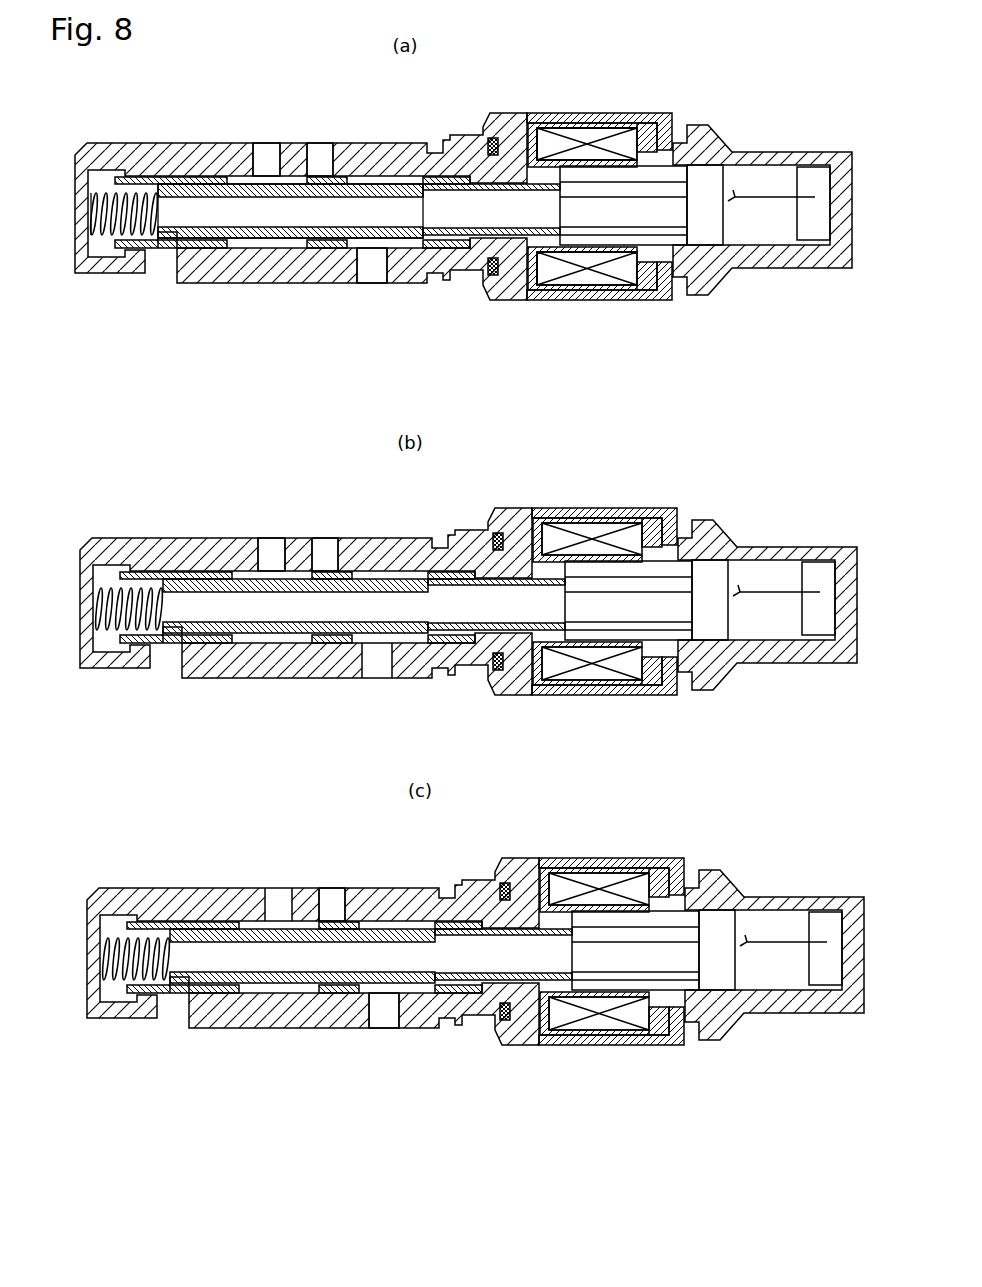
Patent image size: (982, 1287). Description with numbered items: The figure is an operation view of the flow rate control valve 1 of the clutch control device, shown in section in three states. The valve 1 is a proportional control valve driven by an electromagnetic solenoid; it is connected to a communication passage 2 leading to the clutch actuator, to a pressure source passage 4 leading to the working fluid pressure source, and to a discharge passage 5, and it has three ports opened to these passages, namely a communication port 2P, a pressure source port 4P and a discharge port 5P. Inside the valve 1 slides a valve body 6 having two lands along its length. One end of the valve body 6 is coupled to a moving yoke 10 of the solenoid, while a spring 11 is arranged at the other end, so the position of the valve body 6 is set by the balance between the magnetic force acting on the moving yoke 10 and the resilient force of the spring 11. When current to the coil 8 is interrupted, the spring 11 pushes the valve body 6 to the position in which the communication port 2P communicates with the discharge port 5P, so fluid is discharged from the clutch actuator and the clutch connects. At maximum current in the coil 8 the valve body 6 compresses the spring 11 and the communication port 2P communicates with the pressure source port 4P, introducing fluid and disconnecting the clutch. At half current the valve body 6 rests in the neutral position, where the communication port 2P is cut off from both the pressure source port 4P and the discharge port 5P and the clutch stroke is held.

The flow rate control valve 1 is at (216, 287).
The communication passage 2 is at (272, 575).
The communication port 2P is at (315, 141).
The pressure source passage 4 is at (352, 938).
The pressure source port 4P is at (368, 286).
The discharge passage 5 is at (272, 575).
The discharge port 5P is at (262, 141).
The valve body 6 is at (370, 176).
The coil 8 is at (590, 148).
The moving yoke 10 is at (590, 243).
The spring 11 is at (105, 240).